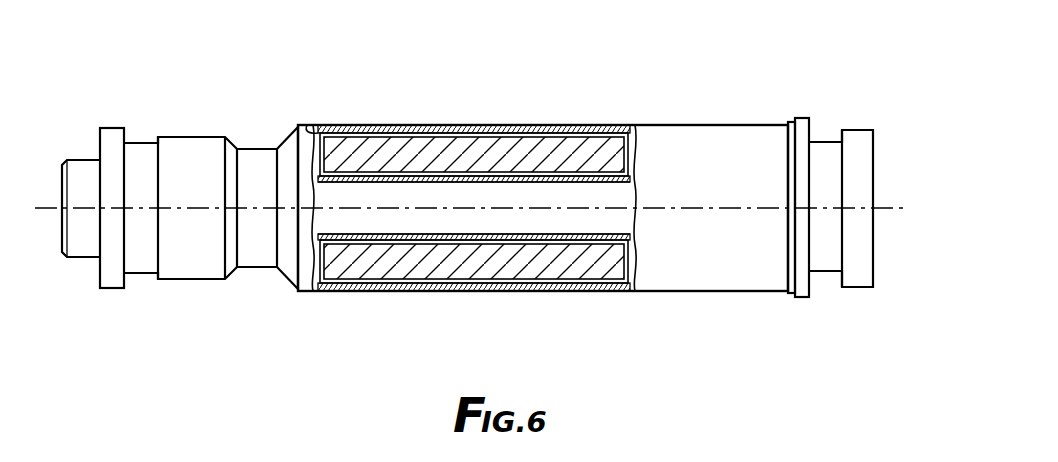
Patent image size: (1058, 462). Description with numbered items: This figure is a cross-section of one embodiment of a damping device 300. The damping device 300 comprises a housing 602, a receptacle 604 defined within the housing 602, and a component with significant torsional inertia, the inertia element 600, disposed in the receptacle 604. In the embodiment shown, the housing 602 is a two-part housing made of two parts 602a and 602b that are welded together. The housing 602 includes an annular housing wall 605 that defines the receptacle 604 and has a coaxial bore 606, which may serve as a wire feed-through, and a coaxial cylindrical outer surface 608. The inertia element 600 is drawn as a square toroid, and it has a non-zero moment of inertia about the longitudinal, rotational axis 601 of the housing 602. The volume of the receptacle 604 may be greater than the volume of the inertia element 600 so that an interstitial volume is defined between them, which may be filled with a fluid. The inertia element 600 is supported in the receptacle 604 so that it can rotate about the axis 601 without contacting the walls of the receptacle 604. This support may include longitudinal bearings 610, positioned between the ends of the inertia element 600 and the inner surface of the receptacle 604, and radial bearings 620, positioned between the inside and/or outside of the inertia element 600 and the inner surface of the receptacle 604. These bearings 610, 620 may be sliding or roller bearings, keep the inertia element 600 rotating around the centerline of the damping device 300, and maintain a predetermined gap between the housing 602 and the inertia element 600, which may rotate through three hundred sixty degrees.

The damping device 300 is at (590, 88).
The inertia element 600 is at (463, 145).
The longitudinal axis 601 is at (830, 205).
The housing 602 is at (363, 291).
The first housing part 602a is at (180, 150).
The second housing part 602b is at (768, 283).
The receptacle 604 is at (418, 283).
The annular housing wall 605 is at (441, 128).
The coaxial bore 606 is at (622, 195).
The coaxial cylindrical outer surface 608 is at (498, 300).
The longitudinal bearings 610 is at (307, 125).
The radial bearings 620 is at (382, 132).